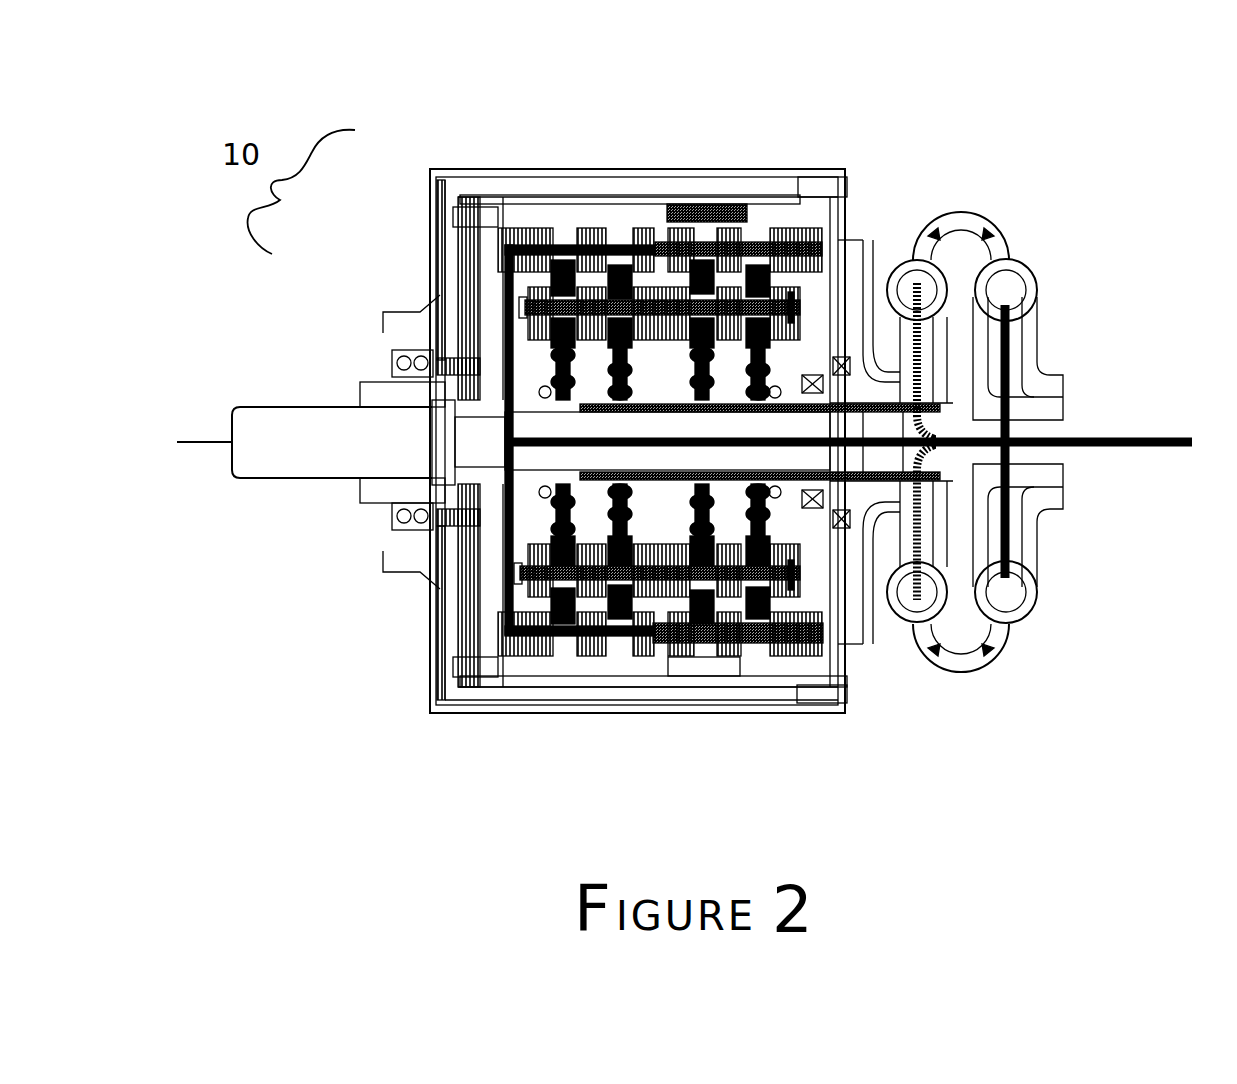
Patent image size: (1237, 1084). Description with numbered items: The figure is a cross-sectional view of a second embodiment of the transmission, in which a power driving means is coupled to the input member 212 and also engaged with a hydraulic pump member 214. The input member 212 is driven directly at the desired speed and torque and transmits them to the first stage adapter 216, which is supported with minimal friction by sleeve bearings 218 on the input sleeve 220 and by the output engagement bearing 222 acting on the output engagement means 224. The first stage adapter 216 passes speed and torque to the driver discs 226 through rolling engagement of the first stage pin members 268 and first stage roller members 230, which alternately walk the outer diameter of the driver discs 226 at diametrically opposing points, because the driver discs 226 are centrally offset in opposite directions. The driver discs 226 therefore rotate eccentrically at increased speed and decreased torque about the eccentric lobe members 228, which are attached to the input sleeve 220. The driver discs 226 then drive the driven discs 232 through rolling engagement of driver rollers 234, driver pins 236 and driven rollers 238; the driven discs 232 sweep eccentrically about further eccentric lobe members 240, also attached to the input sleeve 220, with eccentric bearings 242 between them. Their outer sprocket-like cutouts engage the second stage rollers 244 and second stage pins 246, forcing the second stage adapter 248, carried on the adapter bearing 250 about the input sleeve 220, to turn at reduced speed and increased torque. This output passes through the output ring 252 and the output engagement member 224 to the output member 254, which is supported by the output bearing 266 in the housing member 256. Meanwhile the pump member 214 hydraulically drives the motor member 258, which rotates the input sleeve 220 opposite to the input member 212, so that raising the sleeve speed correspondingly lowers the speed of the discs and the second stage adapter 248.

The input member 212 is at (864, 386).
The hydraulic pump member 214 is at (1072, 403).
The first stage adapter 216 is at (503, 582).
The sleeve bearings 218 is at (820, 416).
The input sleeve 220 is at (892, 401).
The output engagement bearing 222 is at (455, 482).
The output engagement means 224 is at (462, 573).
The driver discs 226 is at (583, 640).
The eccentric lobe members 228 is at (612, 392).
The first stage roller members 230 is at (560, 237).
The driven discs 232 is at (758, 648).
The driver rollers 234 is at (655, 237).
The driver pins 236 is at (525, 307).
The driven rollers 238 is at (740, 290).
The eccentric lobe members 240 is at (750, 392).
The eccentric bearings 242 is at (756, 528).
The second stage rollers 244 is at (727, 648).
The second stage pins 246 is at (815, 505).
The second stage adapter 248 is at (820, 230).
The adapter bearing 250 is at (835, 520).
The output ring 252 is at (588, 683).
The output member 254 is at (311, 406).
The housing member 256 is at (430, 683).
The motor member 258 is at (913, 252).
The output bearing 266 is at (398, 368).
The first stage pin members 268 is at (500, 248).